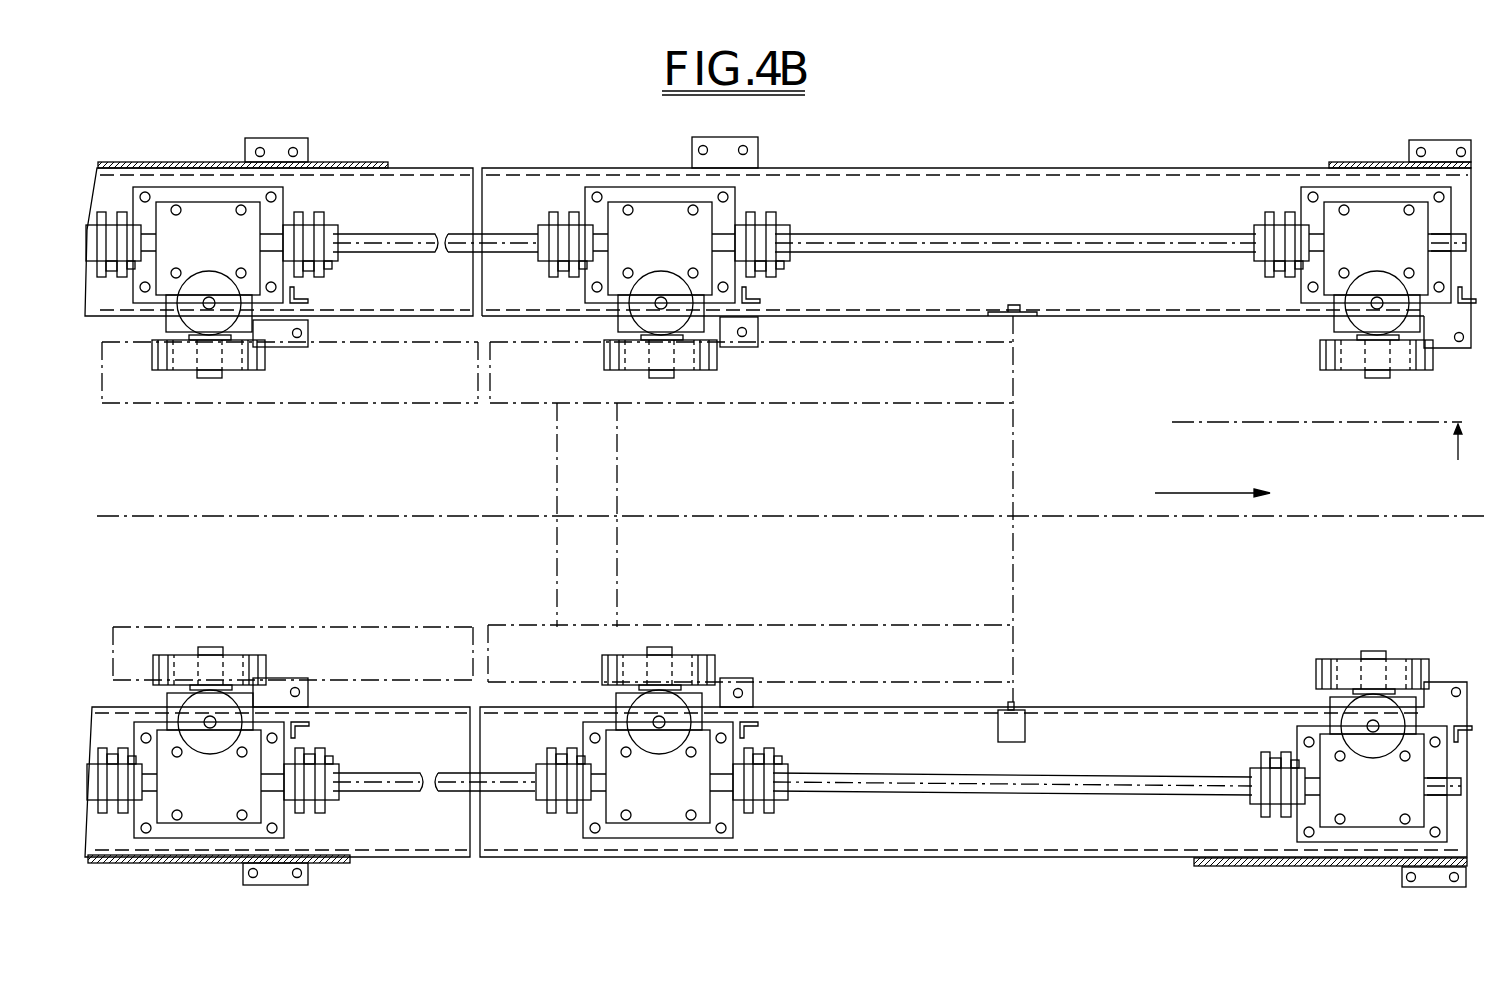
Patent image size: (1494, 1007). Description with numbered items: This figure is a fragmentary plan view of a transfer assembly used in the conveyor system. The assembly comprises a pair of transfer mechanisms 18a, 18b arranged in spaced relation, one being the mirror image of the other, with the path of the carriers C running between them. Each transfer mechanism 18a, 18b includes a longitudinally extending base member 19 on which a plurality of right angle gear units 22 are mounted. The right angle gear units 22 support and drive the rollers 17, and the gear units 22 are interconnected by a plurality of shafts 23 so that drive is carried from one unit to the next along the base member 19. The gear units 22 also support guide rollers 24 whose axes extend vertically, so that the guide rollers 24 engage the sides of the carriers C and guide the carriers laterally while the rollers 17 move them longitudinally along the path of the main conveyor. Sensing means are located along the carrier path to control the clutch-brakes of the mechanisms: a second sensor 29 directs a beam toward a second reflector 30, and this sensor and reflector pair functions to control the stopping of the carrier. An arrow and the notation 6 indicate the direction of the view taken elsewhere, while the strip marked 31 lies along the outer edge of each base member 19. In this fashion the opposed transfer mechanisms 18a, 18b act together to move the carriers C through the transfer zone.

The section line indicator 6 is at (1317, 447).
The rollers 17 is at (255, 360).
The transfer mechanism 18a is at (1078, 188).
The transfer mechanism 18b is at (1112, 832).
The base member 19 is at (1192, 303).
The right angle gear unit 22 is at (218, 217).
The shaft 23 is at (403, 236).
The guide roller 24 is at (206, 283).
The second sensor 29 is at (1013, 727).
The second reflector 30 is at (1020, 318).
The guide strip 31 is at (366, 164).
The carrier C is at (895, 647).